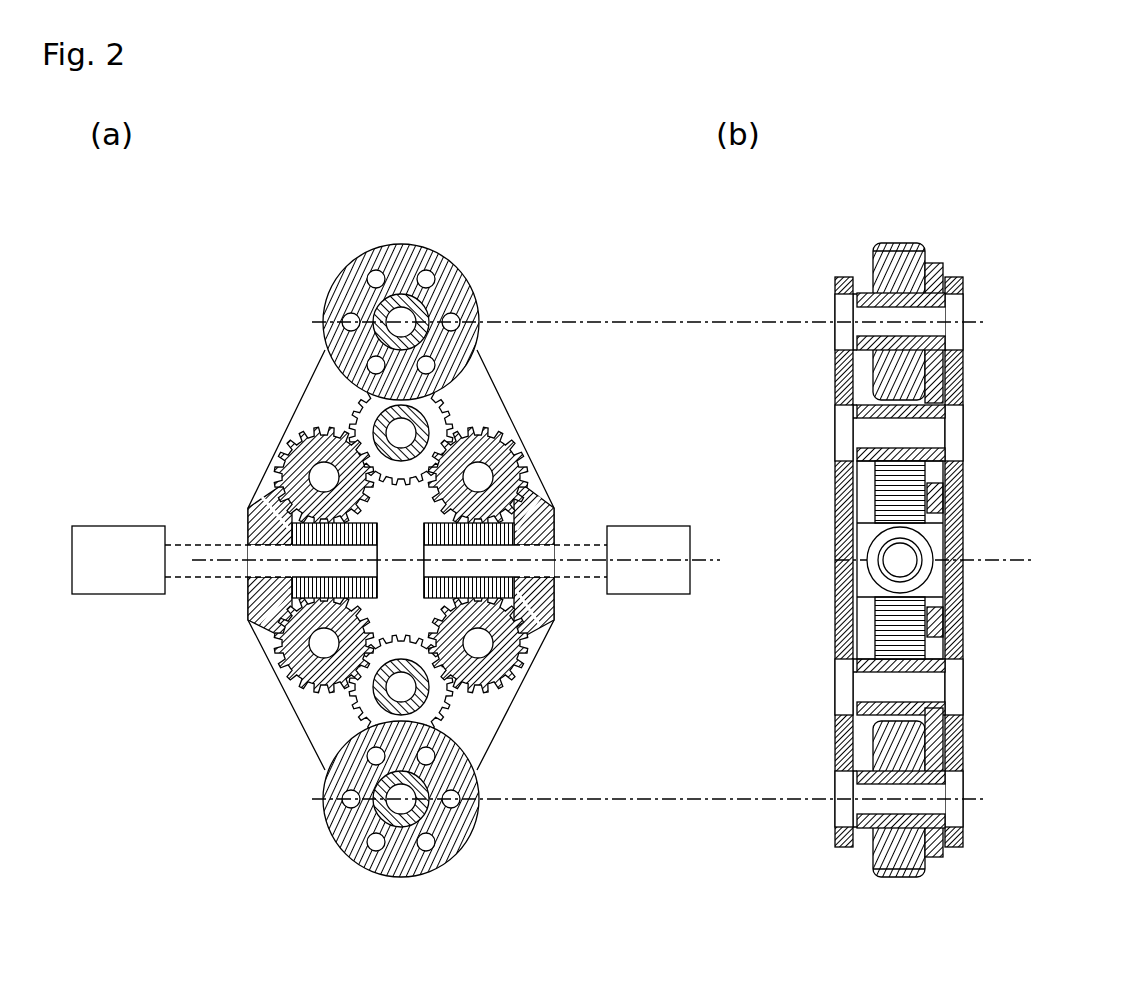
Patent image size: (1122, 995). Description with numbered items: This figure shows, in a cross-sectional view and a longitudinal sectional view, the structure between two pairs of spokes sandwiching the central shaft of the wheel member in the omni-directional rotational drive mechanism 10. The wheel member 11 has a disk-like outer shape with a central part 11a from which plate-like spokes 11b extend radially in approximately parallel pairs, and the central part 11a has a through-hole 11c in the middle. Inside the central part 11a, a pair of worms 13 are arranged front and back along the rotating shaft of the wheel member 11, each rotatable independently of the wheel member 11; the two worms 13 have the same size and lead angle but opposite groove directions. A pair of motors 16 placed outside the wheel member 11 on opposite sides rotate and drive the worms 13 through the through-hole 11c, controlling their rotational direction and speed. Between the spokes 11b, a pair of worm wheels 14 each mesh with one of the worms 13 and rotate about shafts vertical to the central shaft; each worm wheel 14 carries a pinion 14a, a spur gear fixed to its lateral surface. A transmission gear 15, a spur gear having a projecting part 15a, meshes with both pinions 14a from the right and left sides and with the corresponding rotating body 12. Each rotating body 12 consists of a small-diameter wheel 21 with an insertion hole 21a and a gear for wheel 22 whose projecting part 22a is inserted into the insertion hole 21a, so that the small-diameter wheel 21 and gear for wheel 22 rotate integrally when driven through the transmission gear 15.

The omni-directional rotational drive mechanism 10 is at (194, 226).
The wheel member 11 is at (293, 407).
The central part 11a is at (248, 505).
The spokes 11b is at (327, 380).
The through-hole 11c is at (247, 540).
The rotating bodies 12 is at (388, 243).
The worms 13 is at (250, 582).
The worm wheels 14 is at (272, 465).
The pinion 14a is at (943, 497).
The transmission gears 15 is at (460, 405).
The projecting part 15a is at (853, 412).
The motors 16 is at (110, 594).
The small-diameter wheel 21 is at (430, 246).
The insertion hole 21a is at (913, 307).
The gear for wheel 22 is at (360, 288).
The projecting part 22a is at (857, 340).